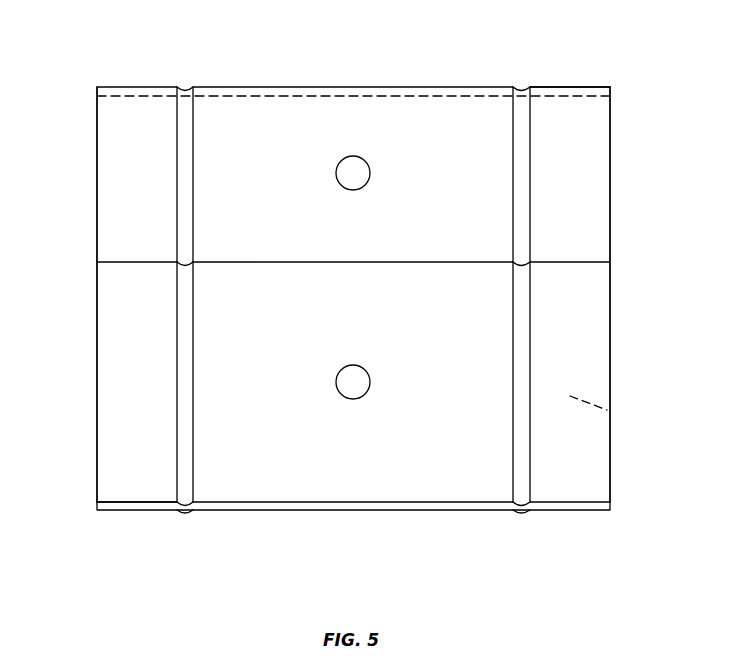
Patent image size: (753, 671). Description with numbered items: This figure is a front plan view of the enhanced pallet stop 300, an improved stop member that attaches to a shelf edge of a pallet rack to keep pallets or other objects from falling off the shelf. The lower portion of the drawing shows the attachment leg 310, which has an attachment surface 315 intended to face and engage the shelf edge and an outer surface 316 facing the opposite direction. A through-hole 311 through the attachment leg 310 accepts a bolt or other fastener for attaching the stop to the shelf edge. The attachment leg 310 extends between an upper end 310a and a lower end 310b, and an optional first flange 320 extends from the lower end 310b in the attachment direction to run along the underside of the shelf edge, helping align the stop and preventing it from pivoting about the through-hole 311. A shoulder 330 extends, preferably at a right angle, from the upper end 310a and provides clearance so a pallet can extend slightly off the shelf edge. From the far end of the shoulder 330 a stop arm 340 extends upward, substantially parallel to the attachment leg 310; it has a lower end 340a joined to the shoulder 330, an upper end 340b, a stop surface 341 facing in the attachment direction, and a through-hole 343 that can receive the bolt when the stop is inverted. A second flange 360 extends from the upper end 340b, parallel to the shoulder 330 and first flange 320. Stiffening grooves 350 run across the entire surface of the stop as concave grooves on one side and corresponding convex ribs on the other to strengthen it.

The enhanced pallet stop 300 is at (624, 548).
The attachment leg 310 is at (95, 400).
The upper end of attachment leg 310a is at (118, 263).
The lower end of attachment leg 310b is at (125, 501).
The through-hole 311 is at (353, 365).
The attachment surface 315 is at (580, 336).
The outer surface 316 is at (605, 409).
The first flange 320 is at (437, 508).
The shoulder 330 is at (278, 262).
The stop arm 340 is at (612, 183).
The lower end of stop arm 340a is at (585, 262).
The upper end of stop arm 340b is at (592, 86).
The stop surface 341 is at (130, 178).
The through-hole 343 is at (366, 160).
The stiffening grooves 350 is at (183, 78).
The second flange 360 is at (310, 88).